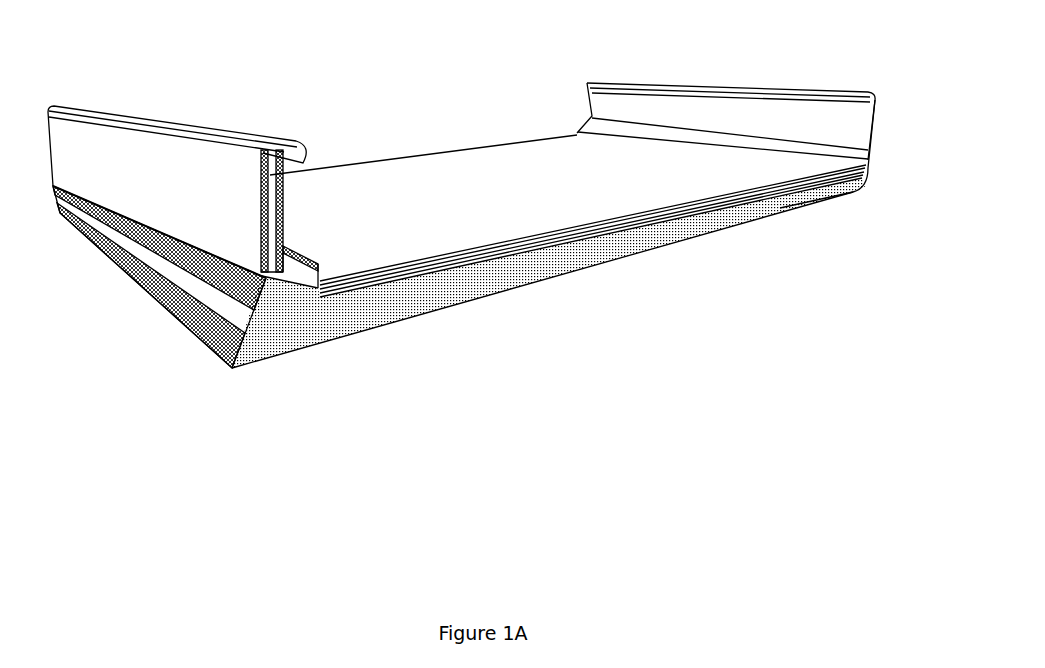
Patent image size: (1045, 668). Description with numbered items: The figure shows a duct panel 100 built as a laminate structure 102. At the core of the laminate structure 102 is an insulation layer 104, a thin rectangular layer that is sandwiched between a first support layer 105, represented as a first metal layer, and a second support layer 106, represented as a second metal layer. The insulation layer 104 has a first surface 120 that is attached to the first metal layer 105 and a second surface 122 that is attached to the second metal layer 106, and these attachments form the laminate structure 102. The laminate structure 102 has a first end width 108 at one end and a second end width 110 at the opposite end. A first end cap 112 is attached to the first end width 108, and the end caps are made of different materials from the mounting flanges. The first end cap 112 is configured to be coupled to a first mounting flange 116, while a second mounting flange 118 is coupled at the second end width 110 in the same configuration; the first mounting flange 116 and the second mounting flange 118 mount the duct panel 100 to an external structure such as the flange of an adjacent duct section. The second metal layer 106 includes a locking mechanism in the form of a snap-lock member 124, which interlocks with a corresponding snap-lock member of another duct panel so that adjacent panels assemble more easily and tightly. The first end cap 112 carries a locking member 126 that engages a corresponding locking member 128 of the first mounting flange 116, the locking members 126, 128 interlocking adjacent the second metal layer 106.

The duct panel 100 is at (476, 229).
The laminate structure 102 is at (461, 165).
The insulation layer 104 is at (493, 275).
The first support layer 105 is at (735, 235).
The second support layer 106 is at (356, 188).
The first end width 108 is at (140, 277).
The second end width 110 is at (884, 150).
The first end cap 112 is at (187, 307).
The first mounting flange 116 is at (98, 143).
The second mounting flange 118 is at (685, 113).
The first surface 120 is at (790, 205).
The second surface 122 is at (410, 277).
The snap-lock member 124 is at (607, 226).
The locking member 126 is at (302, 277).
The locking member 128 is at (287, 282).